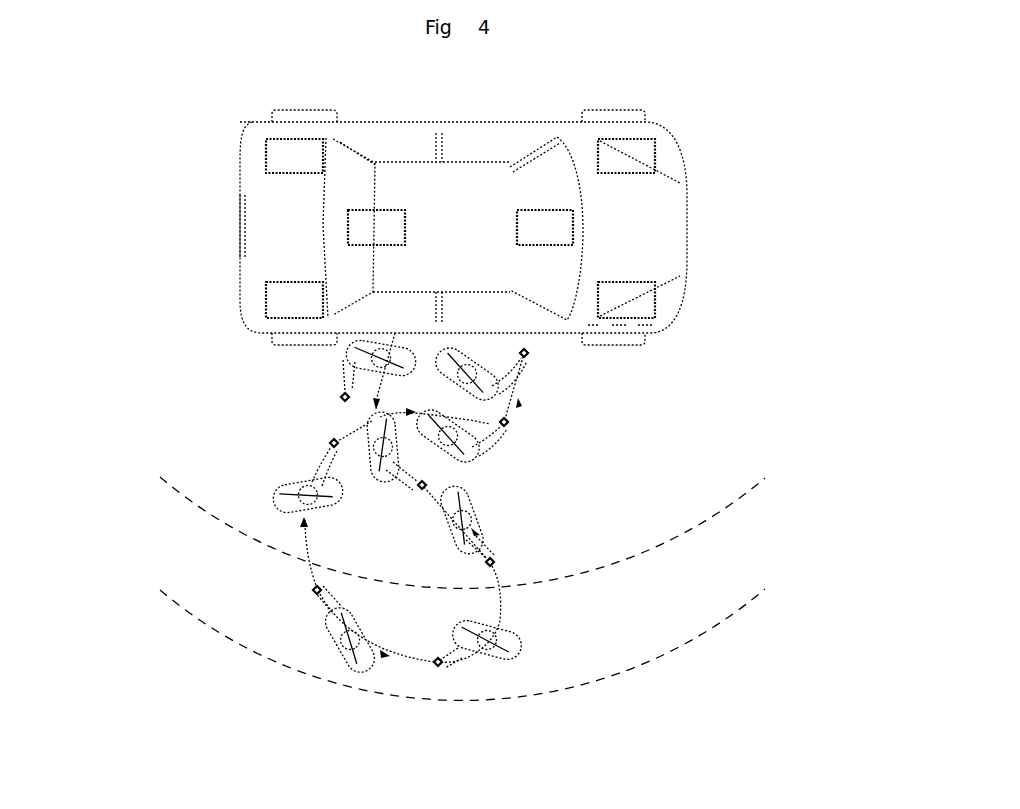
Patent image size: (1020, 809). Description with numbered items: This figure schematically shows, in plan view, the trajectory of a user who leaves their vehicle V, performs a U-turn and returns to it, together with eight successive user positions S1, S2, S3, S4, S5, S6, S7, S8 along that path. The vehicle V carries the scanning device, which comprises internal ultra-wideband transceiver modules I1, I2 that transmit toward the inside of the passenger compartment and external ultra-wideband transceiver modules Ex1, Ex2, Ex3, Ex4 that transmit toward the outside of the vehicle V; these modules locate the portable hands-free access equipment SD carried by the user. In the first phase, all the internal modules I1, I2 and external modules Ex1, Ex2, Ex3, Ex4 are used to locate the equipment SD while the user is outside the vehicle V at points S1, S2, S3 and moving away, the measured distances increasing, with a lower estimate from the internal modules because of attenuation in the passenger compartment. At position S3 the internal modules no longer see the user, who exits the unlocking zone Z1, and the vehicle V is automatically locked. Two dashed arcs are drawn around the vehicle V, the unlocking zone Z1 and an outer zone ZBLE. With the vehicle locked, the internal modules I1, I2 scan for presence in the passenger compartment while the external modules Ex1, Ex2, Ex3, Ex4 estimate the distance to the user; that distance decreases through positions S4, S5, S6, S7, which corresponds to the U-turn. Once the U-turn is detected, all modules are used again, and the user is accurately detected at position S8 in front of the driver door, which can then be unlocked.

The vehicle V is at (348, 101).
The external ultra-wideband transceiver module Ex1 is at (275, 302).
The external ultra-wideband transceiver module Ex2 is at (647, 303).
The external ultra-wideband transceiver module Ex3 is at (647, 152).
The external ultra-wideband transceiver module Ex4 is at (275, 153).
The internal ultra-wideband transceiver module I1 is at (373, 228).
The internal ultra-wideband transceiver module I2 is at (548, 228).
The portable hands-free equipment SD is at (341, 397).
The position of the user S1 is at (341, 399).
The position of the user S2 is at (419, 488).
The position of the user S3 is at (494, 562).
The position of the user S4 is at (436, 660).
The position of the user S5 is at (314, 590).
The position of the user S6 is at (330, 447).
The position of the user S7 is at (507, 424).
The position of the user S8 is at (526, 356).
The unlocking zone Z1 is at (446, 520).
The Bluetooth Low Energy zone ZBLE is at (441, 632).